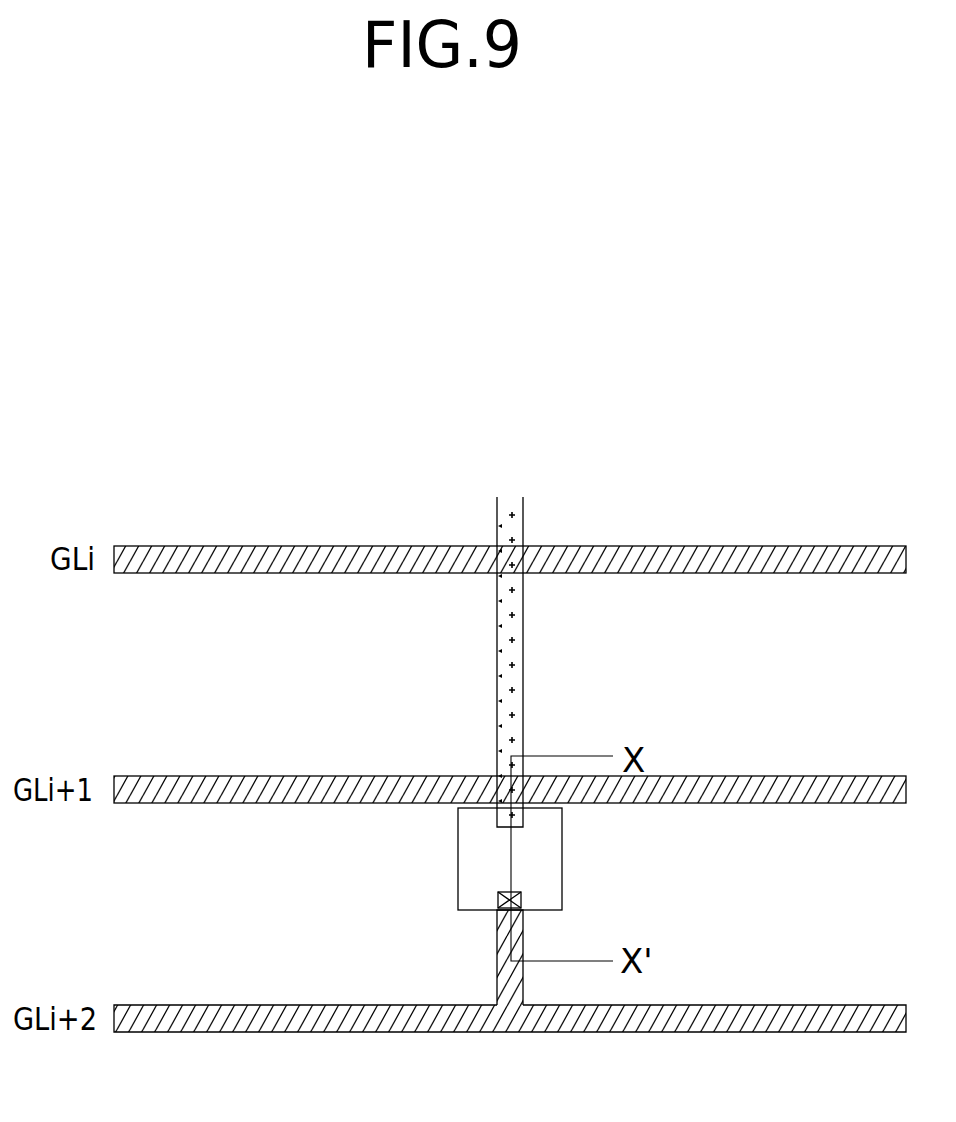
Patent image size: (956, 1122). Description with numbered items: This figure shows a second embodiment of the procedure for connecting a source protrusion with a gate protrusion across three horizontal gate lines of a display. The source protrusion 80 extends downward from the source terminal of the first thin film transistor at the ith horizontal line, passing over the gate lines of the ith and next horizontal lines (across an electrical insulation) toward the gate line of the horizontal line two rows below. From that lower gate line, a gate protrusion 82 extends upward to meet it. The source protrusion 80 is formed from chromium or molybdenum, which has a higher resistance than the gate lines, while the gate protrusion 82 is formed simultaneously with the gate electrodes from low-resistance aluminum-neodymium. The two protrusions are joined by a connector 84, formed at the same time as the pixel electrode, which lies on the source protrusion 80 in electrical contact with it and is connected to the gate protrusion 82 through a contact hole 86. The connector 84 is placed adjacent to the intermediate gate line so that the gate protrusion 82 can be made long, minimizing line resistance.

The source protrusion 80 is at (523, 607).
The gate protrusion 82 is at (523, 973).
The connector 84 is at (562, 882).
The contact hole 86 is at (498, 909).